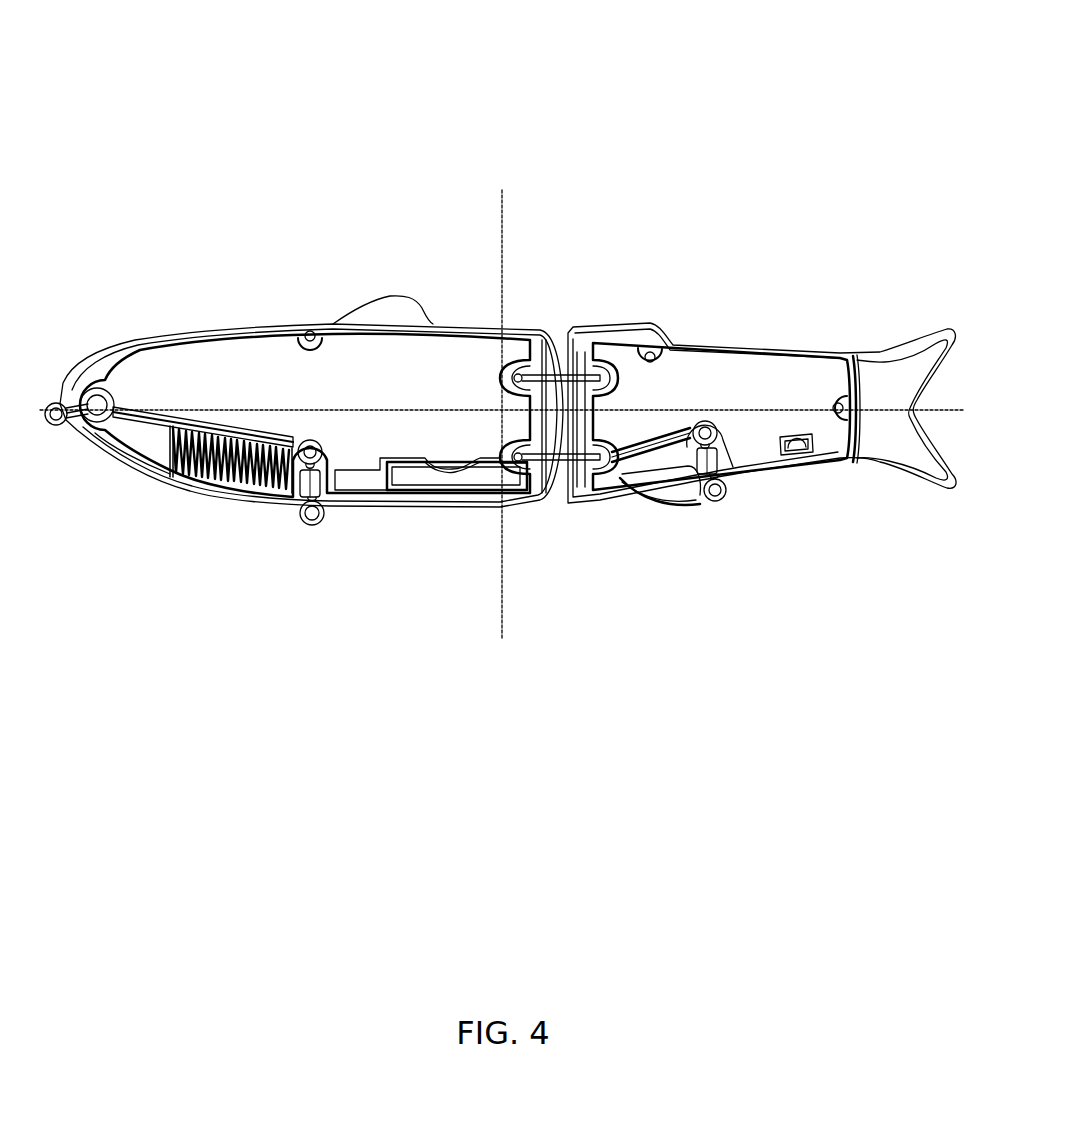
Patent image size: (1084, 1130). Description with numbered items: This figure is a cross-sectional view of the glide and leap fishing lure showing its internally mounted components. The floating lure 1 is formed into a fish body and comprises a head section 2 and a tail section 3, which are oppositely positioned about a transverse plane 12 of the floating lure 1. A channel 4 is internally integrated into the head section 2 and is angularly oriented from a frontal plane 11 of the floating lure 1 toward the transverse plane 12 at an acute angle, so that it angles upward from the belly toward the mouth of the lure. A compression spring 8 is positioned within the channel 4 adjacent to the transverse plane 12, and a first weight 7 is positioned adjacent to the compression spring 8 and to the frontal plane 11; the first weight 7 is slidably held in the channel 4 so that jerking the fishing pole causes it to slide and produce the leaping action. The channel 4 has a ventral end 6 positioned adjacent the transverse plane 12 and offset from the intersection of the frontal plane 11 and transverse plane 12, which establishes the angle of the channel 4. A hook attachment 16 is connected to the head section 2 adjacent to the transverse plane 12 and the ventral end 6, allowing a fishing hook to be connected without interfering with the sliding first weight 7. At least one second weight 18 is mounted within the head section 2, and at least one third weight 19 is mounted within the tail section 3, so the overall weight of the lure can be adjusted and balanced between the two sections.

The floating lure 1 is at (540, 122).
The head section 2 is at (273, 258).
The tail section 3 is at (743, 515).
The channel 4 is at (195, 483).
The ventral end 6 is at (300, 496).
The first weight 7 is at (120, 440).
The compression spring 8 is at (244, 480).
The frontal plane 11 is at (208, 407).
The transverse plane 12 is at (503, 597).
The hook attachment 16 is at (312, 525).
The second weight 18 is at (347, 476).
The third weight 19 is at (648, 462).